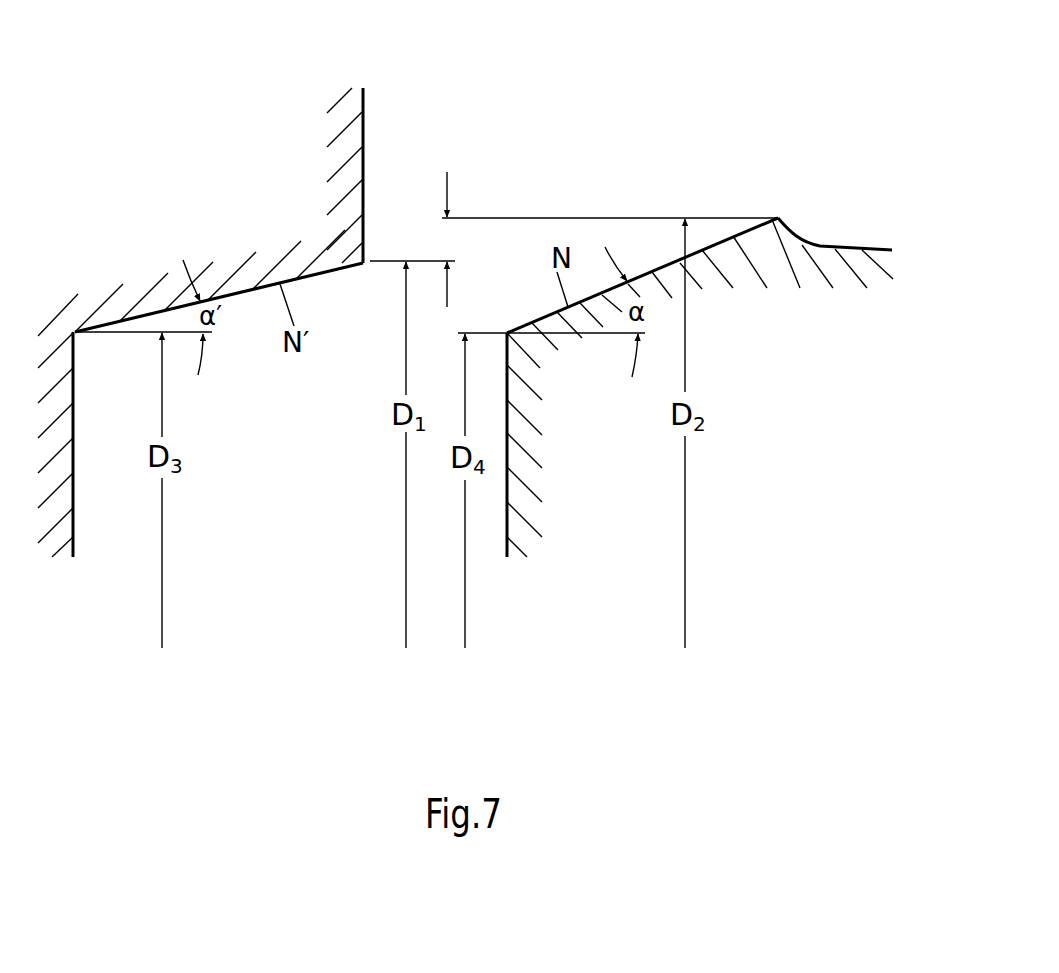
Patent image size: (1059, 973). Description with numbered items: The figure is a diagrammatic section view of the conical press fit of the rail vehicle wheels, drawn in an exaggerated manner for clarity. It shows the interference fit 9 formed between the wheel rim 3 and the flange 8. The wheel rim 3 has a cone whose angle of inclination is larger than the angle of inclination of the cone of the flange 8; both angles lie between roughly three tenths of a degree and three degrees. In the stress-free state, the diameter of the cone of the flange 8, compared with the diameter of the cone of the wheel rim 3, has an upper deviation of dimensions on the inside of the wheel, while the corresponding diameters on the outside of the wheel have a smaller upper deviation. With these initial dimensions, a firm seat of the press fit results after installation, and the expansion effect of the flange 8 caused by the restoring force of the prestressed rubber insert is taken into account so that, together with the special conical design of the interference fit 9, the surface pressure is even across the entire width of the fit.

The wheel rim 3 is at (797, 380).
The flange 8 is at (215, 207).
The interference fit 9 is at (574, 116).